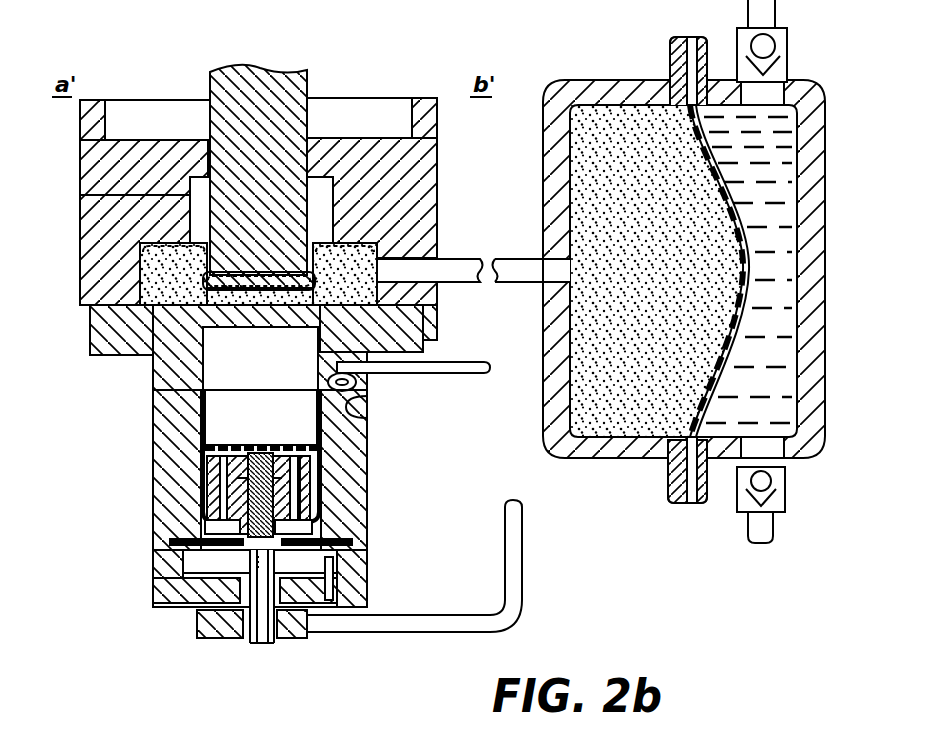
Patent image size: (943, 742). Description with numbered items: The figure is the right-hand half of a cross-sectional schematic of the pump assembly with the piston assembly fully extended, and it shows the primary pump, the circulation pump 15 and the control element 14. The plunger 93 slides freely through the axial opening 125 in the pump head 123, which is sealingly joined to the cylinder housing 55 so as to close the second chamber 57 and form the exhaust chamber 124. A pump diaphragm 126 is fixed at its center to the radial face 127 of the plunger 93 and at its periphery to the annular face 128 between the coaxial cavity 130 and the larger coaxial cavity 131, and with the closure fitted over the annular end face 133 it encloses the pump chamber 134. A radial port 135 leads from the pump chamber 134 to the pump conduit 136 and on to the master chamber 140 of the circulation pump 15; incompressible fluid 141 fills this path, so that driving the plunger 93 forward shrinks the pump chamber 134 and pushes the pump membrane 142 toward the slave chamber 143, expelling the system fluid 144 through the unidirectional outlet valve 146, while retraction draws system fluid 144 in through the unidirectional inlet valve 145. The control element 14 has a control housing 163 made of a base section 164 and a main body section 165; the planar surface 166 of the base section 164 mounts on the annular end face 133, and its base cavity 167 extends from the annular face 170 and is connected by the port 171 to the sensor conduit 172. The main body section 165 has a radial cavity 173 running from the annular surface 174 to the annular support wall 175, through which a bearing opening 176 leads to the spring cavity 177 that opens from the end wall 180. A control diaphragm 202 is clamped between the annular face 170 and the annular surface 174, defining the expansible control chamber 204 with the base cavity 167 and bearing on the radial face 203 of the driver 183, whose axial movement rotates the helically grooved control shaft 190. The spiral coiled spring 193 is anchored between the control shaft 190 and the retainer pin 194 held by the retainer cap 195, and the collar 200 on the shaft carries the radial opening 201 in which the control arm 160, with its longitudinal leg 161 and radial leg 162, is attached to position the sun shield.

The control element 14 is at (153, 493).
The circulation pump 15 is at (630, 78).
The cylinder housing 55 is at (440, 120).
The second chamber 57 is at (141, 112).
The plunger 93 is at (310, 74).
The pump head 123 is at (83, 155).
The exhaust chamber 124 is at (360, 118).
The axial opening 125 is at (190, 195).
The pump diaphragm 126 is at (140, 257).
The radial face 127 is at (207, 273).
The annular face 128 is at (140, 273).
The coaxial cavity 130 is at (320, 195).
The larger coaxial cavity 131 is at (413, 243).
The annular end face 133 is at (432, 322).
The pump chamber 134 is at (153, 357).
The radial port 135 is at (360, 258).
The pump conduit 136 is at (478, 258).
The master chamber 140 is at (647, 428).
The incompressible fluid 141 is at (590, 425).
The pump membrane 142 is at (712, 440).
The slave chamber 143 is at (780, 407).
The system fluid 144 is at (718, 112).
The unidirectional inlet valve 145 is at (793, 513).
The unidirectional outlet valve 146 is at (790, 62).
The control arm 160 is at (525, 607).
The longitudinal leg 161 is at (527, 525).
The radial leg 162 is at (482, 634).
The control housing 163 is at (153, 515).
The base section 164 is at (150, 380).
The main body section 165 is at (153, 447).
The planar surface 166 is at (425, 333).
The base cavity 167 is at (226, 351).
The annular face 170 is at (365, 392).
The port 171 is at (318, 367).
The sensor conduit 172 is at (477, 362).
The radial cavity 173 is at (313, 457).
The annular surface 174 is at (368, 417).
The annular support wall 175 is at (230, 532).
The bearing opening 176 is at (282, 557).
The spring cavity 177 is at (172, 577).
The end wall 180 is at (367, 590).
The driver 183 is at (317, 467).
The control shaft 190 is at (250, 643).
The spiral coiled spring 193 is at (195, 575).
The retainer pin 194 is at (330, 563).
The retainer cap 195 is at (358, 607).
The collar 200 is at (237, 643).
The radial opening 201 is at (320, 643).
The control diaphragm 202 is at (220, 397).
The radial face 203 is at (257, 445).
The expansible control chamber 204 is at (250, 418).